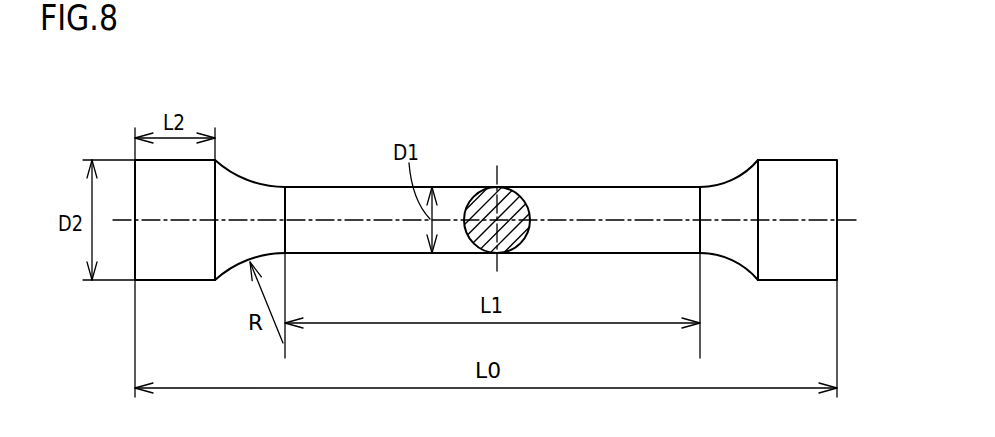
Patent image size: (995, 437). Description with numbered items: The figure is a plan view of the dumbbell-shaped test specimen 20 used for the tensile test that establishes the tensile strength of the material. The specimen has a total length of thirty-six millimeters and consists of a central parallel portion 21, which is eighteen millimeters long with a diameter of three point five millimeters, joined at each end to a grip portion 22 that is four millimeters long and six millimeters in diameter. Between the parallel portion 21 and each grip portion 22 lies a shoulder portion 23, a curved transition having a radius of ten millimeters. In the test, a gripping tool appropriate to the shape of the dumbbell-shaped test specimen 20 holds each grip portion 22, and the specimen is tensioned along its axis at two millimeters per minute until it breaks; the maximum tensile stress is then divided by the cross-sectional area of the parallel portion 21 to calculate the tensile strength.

The dumbbell-shaped test specimen 20 is at (485, 143).
The parallel portion 21 is at (567, 190).
The grip portion 22 is at (801, 167).
The shoulder portion 23 is at (723, 183).